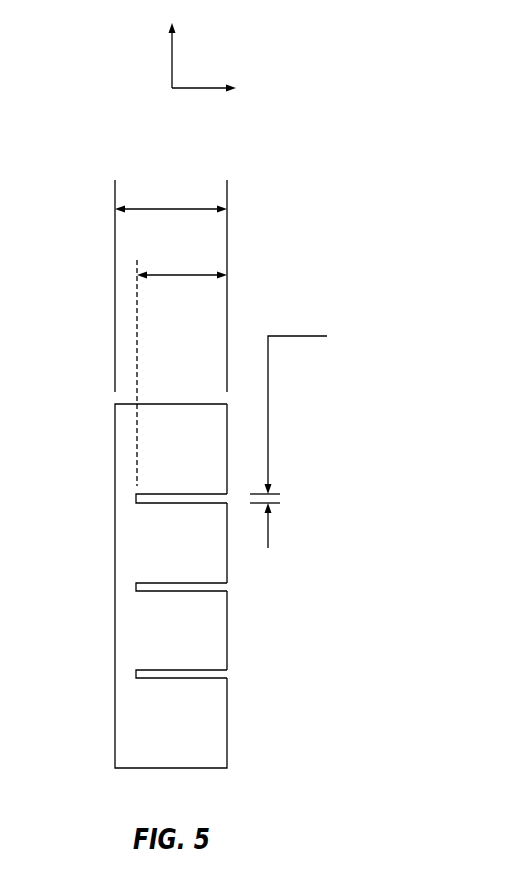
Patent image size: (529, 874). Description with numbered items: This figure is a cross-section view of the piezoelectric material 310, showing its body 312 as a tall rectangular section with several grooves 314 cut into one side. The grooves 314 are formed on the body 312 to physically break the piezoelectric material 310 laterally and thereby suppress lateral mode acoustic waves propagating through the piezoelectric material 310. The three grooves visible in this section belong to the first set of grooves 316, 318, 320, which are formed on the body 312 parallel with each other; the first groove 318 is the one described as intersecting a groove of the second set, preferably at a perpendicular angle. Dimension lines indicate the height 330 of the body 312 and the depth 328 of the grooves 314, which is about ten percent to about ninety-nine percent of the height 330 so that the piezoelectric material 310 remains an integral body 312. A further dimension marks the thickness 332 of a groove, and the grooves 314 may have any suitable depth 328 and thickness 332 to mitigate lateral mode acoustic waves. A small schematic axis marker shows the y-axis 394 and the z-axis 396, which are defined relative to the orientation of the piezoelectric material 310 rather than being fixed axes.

The piezoelectric material 310 is at (117, 558).
The body 312 is at (131, 546).
The grooves 314 is at (293, 423).
The groove of the first set of grooves 316 is at (172, 504).
The first groove 318 is at (172, 592).
The groove of the first set of grooves 320 is at (172, 679).
The depth 328 is at (228, 275).
The height 330 is at (228, 209).
The thickness 332 is at (373, 348).
The y-axis 394 is at (170, 69).
The z-axis 396 is at (206, 89).